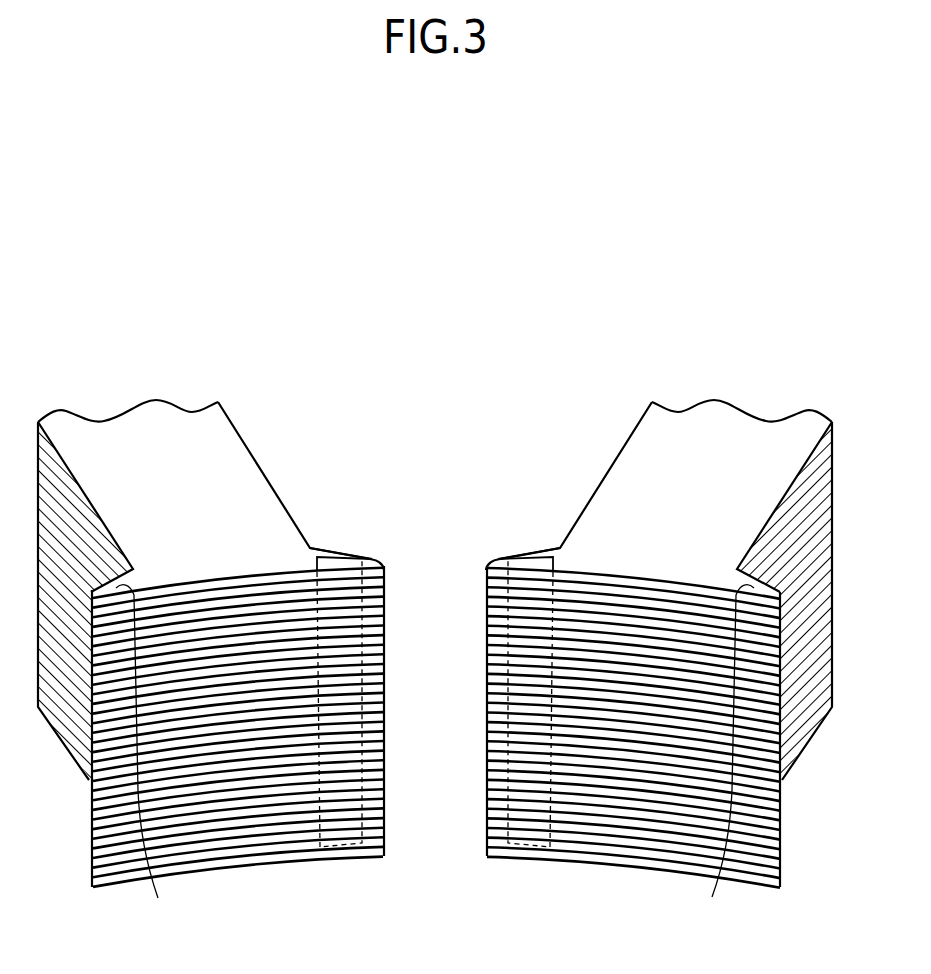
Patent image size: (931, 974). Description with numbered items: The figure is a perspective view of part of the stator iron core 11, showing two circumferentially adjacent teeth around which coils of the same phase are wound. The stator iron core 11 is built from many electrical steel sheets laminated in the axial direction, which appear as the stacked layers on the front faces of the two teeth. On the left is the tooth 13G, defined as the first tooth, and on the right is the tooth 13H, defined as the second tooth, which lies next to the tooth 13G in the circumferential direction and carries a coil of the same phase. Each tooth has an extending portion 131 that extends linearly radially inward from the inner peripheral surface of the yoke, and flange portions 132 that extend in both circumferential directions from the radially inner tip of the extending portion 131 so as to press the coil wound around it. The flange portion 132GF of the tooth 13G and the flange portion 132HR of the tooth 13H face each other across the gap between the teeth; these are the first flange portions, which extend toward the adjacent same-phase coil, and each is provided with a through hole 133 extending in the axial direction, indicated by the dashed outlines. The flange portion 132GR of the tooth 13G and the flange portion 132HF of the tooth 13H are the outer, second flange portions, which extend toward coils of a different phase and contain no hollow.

The stator iron core 11 is at (430, 318).
The tooth 13G is at (147, 371).
The tooth 13H is at (722, 371).
The extending portion 131 is at (212, 453).
The flange portions 132 is at (485, 558).
The flange portion 132GF is at (370, 557).
The flange portion 132GR is at (167, 766).
The flange portion 132HR is at (500, 557).
The flange portion 132HF is at (705, 766).
The through hole 133 is at (339, 735).